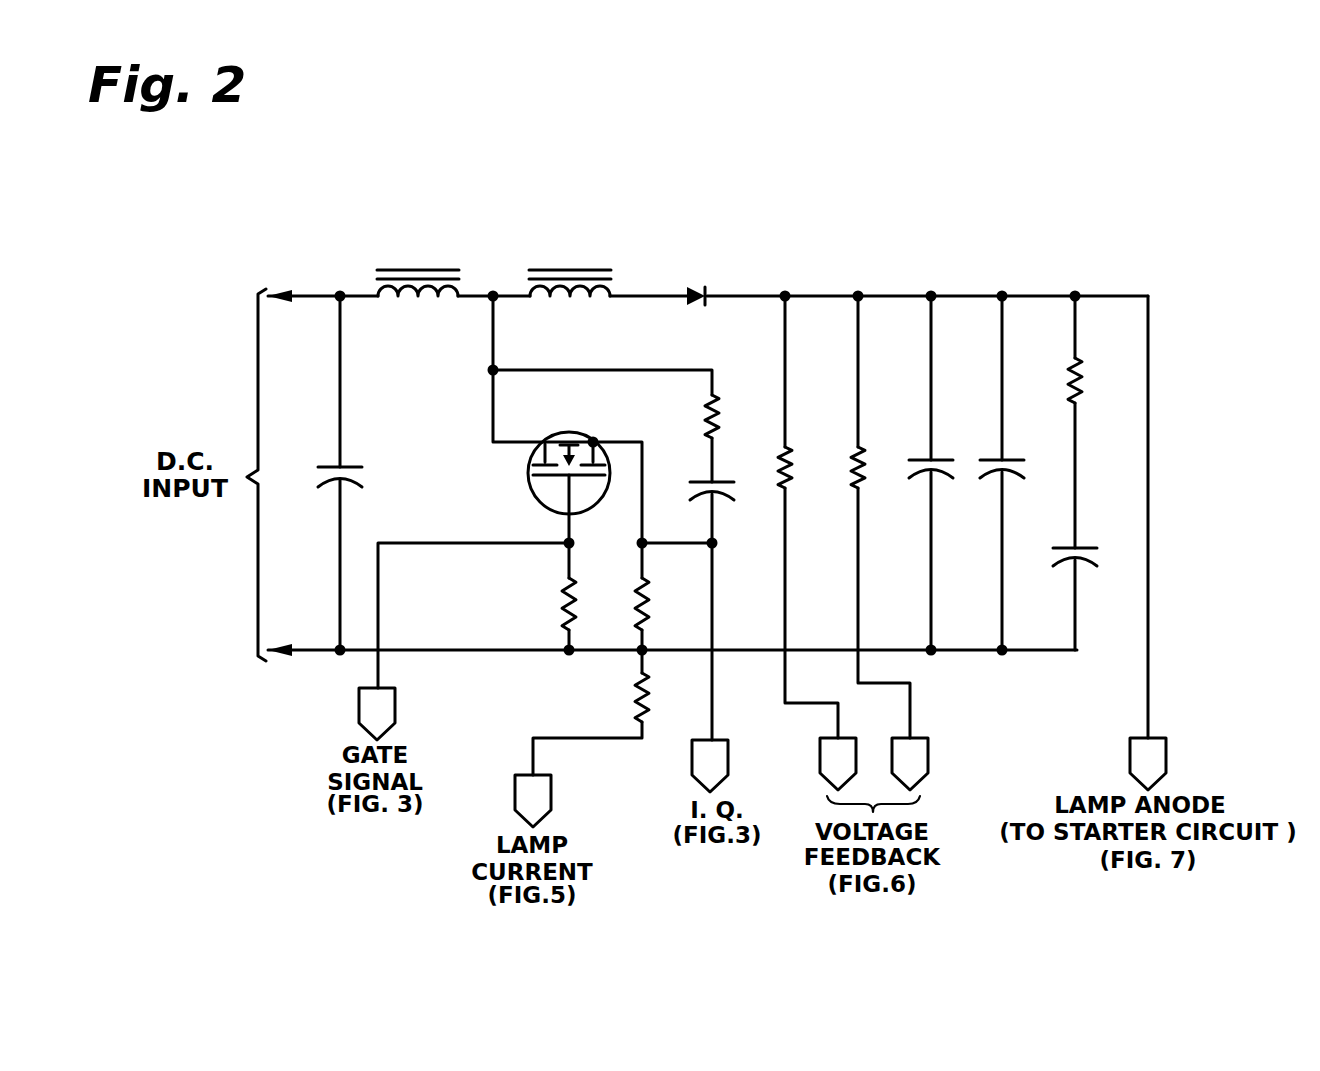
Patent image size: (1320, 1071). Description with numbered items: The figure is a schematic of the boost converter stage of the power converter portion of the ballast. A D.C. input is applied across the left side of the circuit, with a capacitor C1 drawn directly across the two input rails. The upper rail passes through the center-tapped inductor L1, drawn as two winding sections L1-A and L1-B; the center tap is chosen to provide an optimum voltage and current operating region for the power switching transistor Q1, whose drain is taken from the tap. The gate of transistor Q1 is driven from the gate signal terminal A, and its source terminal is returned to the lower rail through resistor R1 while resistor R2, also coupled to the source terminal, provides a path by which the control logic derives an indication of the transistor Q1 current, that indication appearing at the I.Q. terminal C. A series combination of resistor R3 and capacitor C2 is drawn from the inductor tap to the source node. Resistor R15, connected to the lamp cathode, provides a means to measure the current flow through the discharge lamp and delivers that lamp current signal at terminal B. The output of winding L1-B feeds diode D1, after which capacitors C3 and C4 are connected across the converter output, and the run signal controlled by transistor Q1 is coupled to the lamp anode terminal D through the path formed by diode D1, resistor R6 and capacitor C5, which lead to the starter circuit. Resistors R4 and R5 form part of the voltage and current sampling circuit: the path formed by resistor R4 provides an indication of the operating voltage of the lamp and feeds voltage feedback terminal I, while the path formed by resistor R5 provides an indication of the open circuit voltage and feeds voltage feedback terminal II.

The inductor L1 first winding section L1-A is at (419, 268).
The inductor L1 second winding section L1-B is at (573, 268).
The diode D1 is at (700, 290).
The capacitor C1 is at (359, 469).
The power switching transistor Q1 is at (534, 503).
The resistor R3 is at (711, 422).
The capacitor C2 is at (734, 490).
The resistor R1 is at (563, 605).
The resistor R2 is at (638, 588).
The resistor R15 is at (636, 699).
The resistor R4 is at (789, 467).
The resistor R5 is at (862, 467).
The capacitor C3 is at (950, 469).
The capacitor C4 is at (1022, 469).
The resistor R6 is at (1070, 383).
The capacitor C5 is at (1054, 559).
The gate signal terminal A is at (377, 714).
The lamp current terminal B is at (533, 801).
The I.Q. terminal C is at (710, 766).
The voltage feedback terminal I is at (838, 764).
The voltage feedback terminal II is at (910, 764).
The lamp anode terminal D is at (1148, 764).